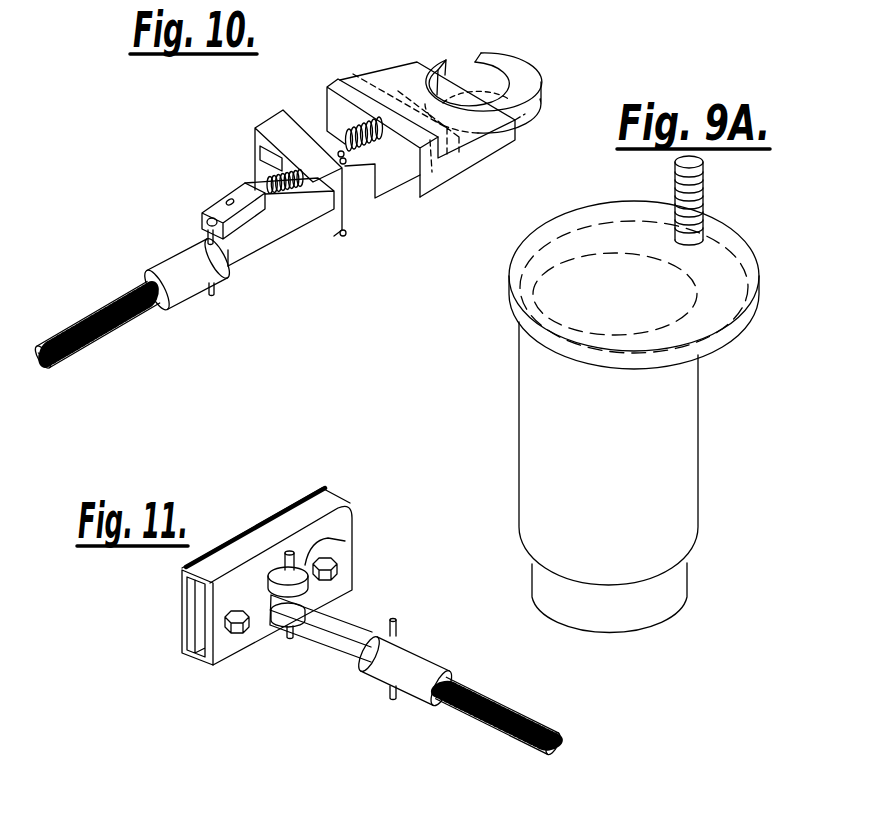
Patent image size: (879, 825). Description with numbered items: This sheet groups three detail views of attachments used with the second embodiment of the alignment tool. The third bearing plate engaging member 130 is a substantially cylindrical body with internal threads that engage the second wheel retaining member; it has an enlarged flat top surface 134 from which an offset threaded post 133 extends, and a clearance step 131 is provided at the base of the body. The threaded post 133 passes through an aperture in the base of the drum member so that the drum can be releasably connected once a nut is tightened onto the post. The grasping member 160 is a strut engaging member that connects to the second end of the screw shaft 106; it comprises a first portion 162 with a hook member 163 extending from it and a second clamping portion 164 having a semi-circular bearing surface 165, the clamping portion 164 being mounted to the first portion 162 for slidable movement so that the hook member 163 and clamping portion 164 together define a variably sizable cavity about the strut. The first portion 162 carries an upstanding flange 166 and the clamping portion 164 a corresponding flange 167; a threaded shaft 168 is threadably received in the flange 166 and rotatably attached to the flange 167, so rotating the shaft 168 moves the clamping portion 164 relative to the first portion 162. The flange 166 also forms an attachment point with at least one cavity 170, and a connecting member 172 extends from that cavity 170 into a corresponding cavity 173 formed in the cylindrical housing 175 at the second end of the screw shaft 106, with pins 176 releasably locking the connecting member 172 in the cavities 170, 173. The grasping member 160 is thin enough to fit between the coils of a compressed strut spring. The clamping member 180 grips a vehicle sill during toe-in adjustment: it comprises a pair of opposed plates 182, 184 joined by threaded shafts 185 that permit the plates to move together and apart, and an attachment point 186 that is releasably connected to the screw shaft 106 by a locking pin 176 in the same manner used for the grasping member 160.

In FIG. 10, the screw shaft 106 is at (77, 355).
In FIG. 11, the screw shaft 106 is at (500, 703).
In FIG. 9A, the third bearing plate engaging member 130 is at (683, 452).
In FIG. 9A, the clearance step 131 is at (662, 587).
In FIG. 9A, the offset threaded post 133 is at (674, 197).
In FIG. 9A, the top surface 134 is at (707, 255).
In FIG. 10, the grasping member 160 is at (243, 116).
In FIG. 10, the first portion 162 is at (522, 72).
In FIG. 10, the hook member 163 is at (500, 52).
In FIG. 10, the second clamping portion 164 is at (462, 166).
In FIG. 10, the semi-circular bearing surface 165 is at (438, 67).
In FIG. 10, the upstanding flange 166 is at (357, 207).
In FIG. 10, the flange 167 is at (350, 72).
In FIG. 10, the threaded shaft 168 is at (258, 175).
In FIG. 10, the cavity 170 is at (300, 228).
In FIG. 10, the connecting member 172 is at (244, 250).
In FIG. 10, the cavity 173 is at (203, 235).
In FIG. 10, the cylindrical housing 175 is at (167, 258).
In FIG. 10, the pin 176 is at (211, 296).
In FIG. 11, the pin 176 is at (285, 562).
In FIG. 11, the clamping member 180 is at (231, 725).
In FIG. 11, the plate 182 is at (180, 612).
In FIG. 11, the plate 184 is at (212, 632).
In FIG. 11, the threaded shaft 185 is at (340, 570).
In FIG. 11, the attachment point 186 is at (348, 528).